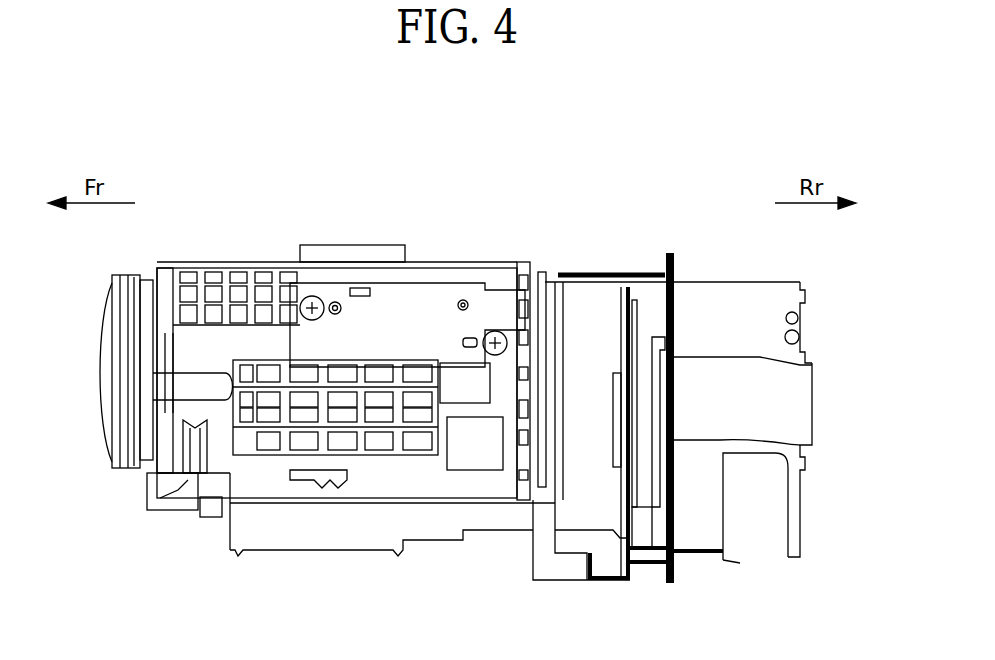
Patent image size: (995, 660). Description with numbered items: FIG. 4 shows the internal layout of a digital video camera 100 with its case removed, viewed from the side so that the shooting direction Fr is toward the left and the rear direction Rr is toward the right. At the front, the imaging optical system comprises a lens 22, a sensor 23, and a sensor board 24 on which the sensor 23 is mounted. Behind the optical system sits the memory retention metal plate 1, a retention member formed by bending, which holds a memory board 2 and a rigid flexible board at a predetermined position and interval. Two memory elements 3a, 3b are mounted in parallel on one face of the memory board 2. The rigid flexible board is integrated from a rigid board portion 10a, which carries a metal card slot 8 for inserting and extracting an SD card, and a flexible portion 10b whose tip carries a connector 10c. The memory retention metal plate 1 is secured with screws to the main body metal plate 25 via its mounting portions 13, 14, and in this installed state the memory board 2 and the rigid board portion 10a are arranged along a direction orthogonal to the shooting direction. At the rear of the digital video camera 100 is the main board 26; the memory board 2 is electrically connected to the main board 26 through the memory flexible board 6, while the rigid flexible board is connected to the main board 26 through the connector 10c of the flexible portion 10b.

The digital video camera 100 is at (636, 178).
The lens 22 is at (108, 320).
The sensor 23 is at (528, 353).
The sensor board 24 is at (543, 413).
The mounting portion 14 is at (558, 273).
The memory board 2 is at (622, 310).
The memory retention metal plate 1 is at (635, 300).
The memory element 3a is at (645, 298).
The memory element 3b is at (640, 513).
The card slot 8 is at (658, 337).
The rigid board portion 10a is at (682, 327).
The flexible portion 10b is at (697, 535).
The connector 10c is at (767, 488).
The main board 26 is at (797, 268).
The memory flexible board 6 is at (805, 402).
The mounting portion 13 is at (590, 580).
The main body metal plate 25 is at (555, 570).